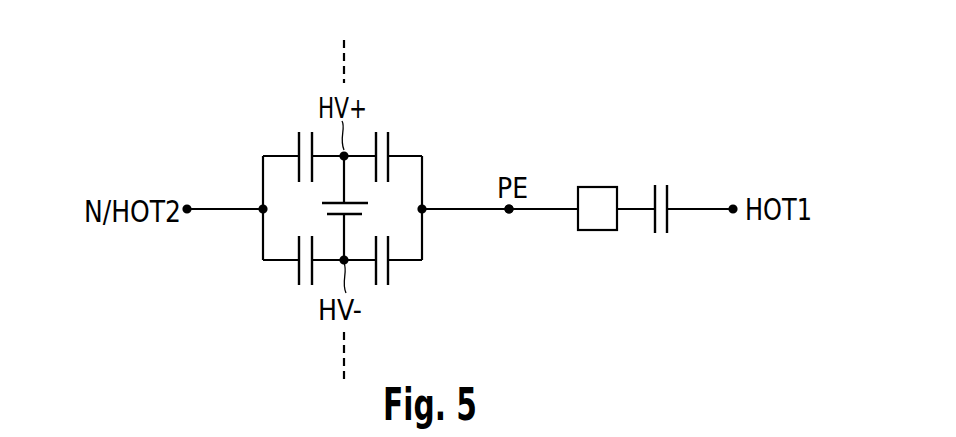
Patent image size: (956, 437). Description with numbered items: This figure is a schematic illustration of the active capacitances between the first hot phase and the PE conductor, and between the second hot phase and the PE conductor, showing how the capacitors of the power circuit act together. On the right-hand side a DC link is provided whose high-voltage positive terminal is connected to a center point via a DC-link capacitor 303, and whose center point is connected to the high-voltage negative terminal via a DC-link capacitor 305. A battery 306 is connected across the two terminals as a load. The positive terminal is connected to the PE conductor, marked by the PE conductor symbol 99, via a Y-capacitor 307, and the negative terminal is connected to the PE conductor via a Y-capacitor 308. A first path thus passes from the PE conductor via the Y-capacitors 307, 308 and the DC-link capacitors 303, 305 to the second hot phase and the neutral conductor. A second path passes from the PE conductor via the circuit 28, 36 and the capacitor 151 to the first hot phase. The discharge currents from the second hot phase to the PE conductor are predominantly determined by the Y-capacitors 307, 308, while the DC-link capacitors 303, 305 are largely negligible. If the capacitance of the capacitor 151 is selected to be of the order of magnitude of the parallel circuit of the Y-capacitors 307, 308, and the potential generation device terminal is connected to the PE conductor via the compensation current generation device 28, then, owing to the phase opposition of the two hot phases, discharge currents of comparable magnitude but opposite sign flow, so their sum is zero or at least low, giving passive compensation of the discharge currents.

The DC-link capacitor 303 is at (298, 143).
The DC-link capacitor 305 is at (298, 273).
The battery 306 is at (323, 205).
The Y-capacitor 307 is at (389, 143).
The Y-capacitor 308 is at (389, 273).
The PE conductor symbol 99 is at (509, 212).
The compensation current generation device 28 is at (628, 178).
The circuit 36 is at (598, 187).
The capacitor 151 is at (668, 222).